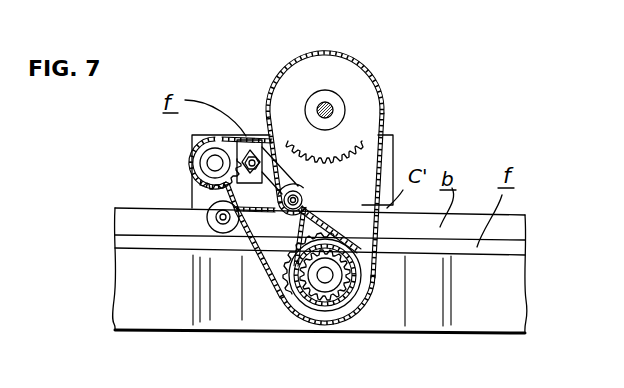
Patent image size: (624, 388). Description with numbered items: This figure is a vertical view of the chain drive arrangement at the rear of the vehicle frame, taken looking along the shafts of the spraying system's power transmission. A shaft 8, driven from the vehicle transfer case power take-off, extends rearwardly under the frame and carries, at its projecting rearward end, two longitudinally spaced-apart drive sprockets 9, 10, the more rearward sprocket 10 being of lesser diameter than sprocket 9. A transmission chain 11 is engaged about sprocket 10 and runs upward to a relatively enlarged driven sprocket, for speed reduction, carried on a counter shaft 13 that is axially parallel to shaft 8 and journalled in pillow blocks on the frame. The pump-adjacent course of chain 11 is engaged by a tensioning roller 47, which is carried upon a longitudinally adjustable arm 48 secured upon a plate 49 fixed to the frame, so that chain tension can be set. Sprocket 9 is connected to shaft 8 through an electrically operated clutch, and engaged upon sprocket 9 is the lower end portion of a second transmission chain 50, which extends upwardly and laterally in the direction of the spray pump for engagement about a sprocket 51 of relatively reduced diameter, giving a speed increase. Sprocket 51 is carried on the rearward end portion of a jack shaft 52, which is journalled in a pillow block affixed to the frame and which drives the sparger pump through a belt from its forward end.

The shaft 8 is at (323, 277).
The drive sprocket 9 is at (305, 320).
The drive sprocket 10 is at (353, 300).
The transmission chain 11 is at (383, 117).
The counter shaft 13 is at (327, 109).
The tensioning roller 47 is at (303, 204).
The arm 48 is at (265, 199).
The plate 49 is at (257, 140).
The transmission chain 50 is at (280, 295).
The sprocket 51 is at (200, 157).
The jack shaft 52 is at (213, 163).